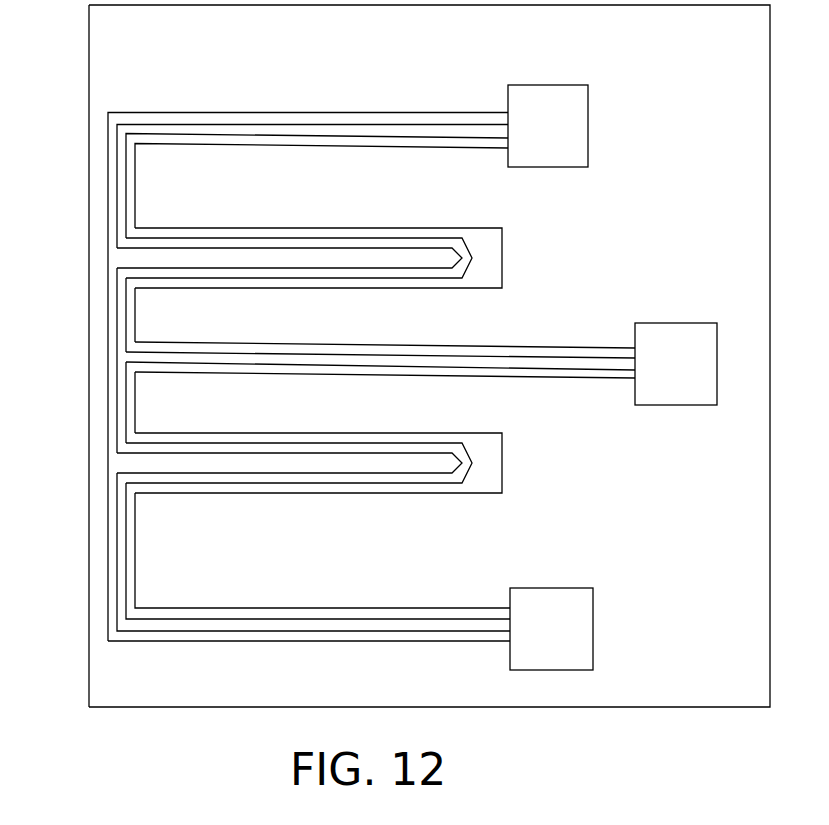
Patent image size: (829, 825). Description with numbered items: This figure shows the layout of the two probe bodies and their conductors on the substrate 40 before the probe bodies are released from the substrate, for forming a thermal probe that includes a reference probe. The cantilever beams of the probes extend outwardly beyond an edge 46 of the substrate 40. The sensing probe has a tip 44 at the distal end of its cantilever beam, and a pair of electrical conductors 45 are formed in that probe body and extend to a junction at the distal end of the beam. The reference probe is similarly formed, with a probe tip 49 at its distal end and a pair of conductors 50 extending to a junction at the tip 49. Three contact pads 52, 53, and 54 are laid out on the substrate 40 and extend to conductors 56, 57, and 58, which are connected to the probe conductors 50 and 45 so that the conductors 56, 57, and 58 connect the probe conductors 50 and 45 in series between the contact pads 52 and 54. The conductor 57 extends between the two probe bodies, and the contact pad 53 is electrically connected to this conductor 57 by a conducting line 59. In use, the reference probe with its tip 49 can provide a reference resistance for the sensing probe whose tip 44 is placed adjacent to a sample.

The substrate 40 is at (682, 710).
The tip 44 is at (477, 463).
The pair of electrical conductors 45 is at (273, 445).
The edge of the substrate 46 is at (88, 660).
The probe tip 49 is at (476, 258).
The pair of conductors 50 is at (353, 278).
The contact pad 52 is at (590, 130).
The contact pad 53 is at (668, 323).
The contact pad 54 is at (595, 620).
The conductor 56 is at (310, 124).
The conductor 57 is at (132, 324).
The conductor 58 is at (382, 628).
The conducting line 59 is at (352, 364).